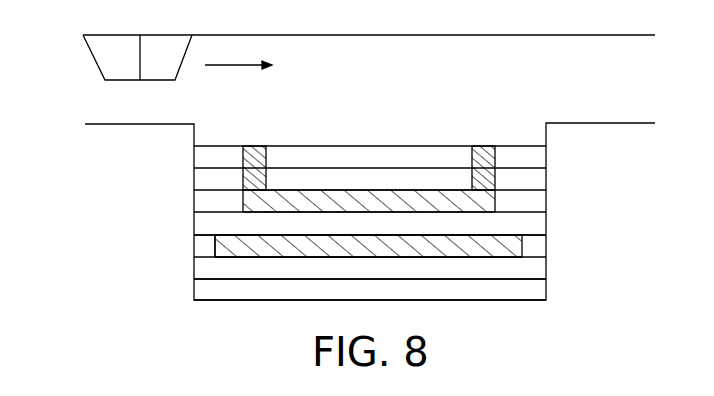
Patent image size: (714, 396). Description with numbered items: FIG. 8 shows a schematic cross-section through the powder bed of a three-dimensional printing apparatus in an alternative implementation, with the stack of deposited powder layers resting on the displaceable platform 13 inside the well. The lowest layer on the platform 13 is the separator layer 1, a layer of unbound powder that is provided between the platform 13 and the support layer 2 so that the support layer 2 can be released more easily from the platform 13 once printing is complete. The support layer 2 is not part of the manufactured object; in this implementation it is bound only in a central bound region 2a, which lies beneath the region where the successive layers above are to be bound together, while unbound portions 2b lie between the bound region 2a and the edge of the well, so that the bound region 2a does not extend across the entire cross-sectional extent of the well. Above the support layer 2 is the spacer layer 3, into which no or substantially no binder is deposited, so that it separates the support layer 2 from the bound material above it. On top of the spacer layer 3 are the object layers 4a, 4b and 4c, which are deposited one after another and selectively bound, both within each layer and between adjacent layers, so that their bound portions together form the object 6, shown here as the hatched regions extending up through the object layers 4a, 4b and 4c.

The separator layer 1 is at (546, 267).
The displaceable platform 13 is at (546, 290).
The support layer 2 is at (546, 244).
The bound region 2a is at (500, 258).
The unbound portions 2b is at (197, 247).
The spacer layer 3 is at (546, 222).
The object layer 4a is at (546, 201).
The object layer 4b is at (546, 178).
The object layer 4c is at (546, 157).
The object 6 is at (479, 147).